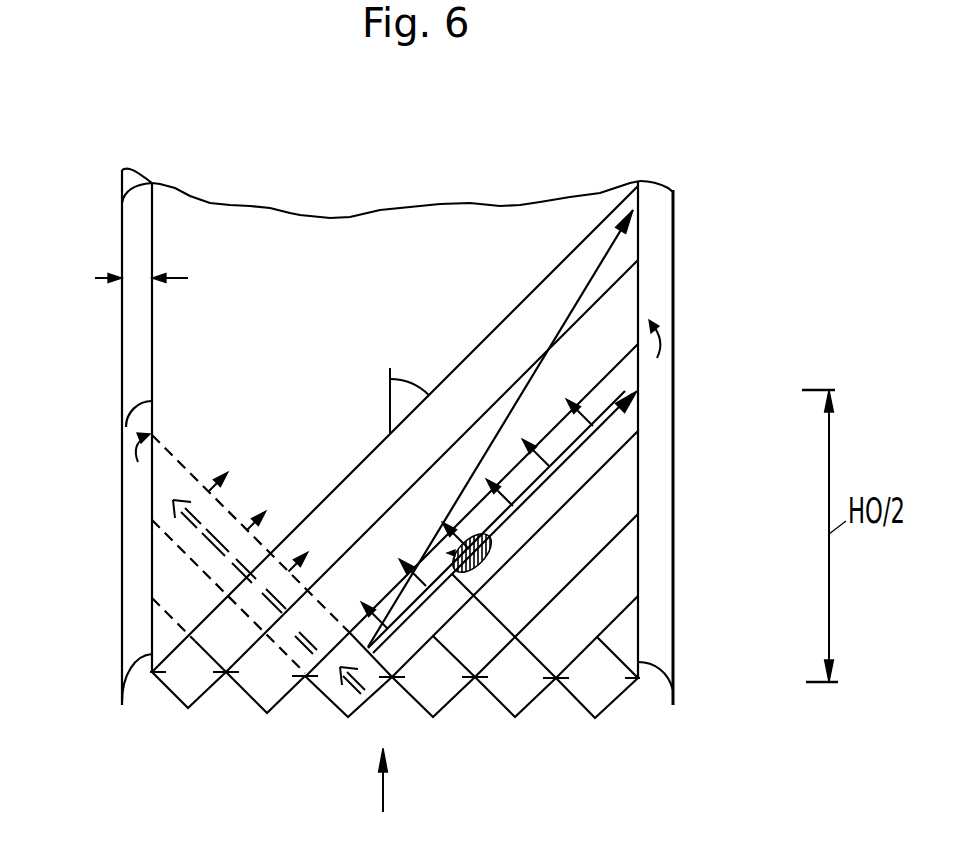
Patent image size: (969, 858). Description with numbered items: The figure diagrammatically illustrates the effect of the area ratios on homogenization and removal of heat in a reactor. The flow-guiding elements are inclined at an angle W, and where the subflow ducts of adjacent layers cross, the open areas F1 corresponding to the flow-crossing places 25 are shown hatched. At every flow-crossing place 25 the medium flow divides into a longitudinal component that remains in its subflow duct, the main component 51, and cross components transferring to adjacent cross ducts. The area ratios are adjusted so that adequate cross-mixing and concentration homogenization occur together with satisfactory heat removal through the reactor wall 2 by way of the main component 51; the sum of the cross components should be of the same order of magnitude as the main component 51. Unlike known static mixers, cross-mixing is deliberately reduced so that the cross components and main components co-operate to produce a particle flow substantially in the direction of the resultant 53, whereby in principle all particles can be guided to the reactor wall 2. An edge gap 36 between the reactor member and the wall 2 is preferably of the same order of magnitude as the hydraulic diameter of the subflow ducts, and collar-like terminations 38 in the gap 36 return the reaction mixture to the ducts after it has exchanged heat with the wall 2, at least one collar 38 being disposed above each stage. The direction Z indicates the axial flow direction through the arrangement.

The reactor wall 2 is at (122, 522).
The edge gap 36 is at (100, 275).
The collar-like termination 38 is at (135, 405).
The main component 51 is at (533, 495).
The resultant 53 is at (588, 285).
The open area F1 is at (508, 554).
The flow-crossing place 25 is at (610, 555).
The angle W is at (413, 374).
The flow direction Z is at (380, 803).